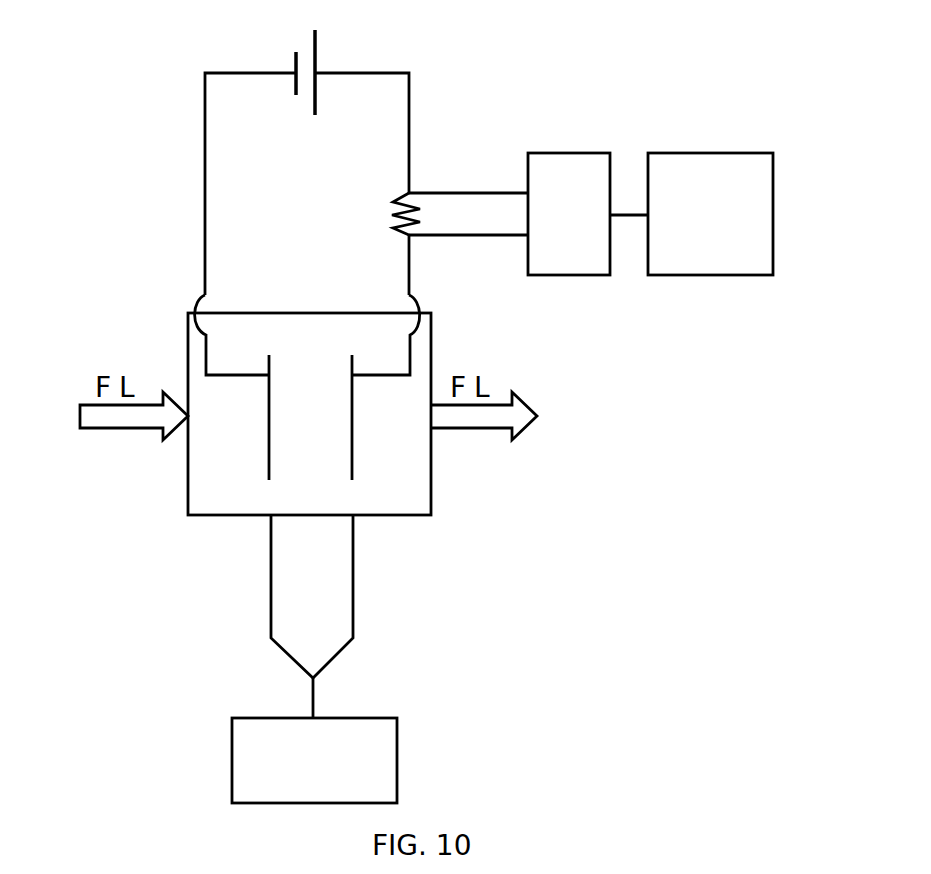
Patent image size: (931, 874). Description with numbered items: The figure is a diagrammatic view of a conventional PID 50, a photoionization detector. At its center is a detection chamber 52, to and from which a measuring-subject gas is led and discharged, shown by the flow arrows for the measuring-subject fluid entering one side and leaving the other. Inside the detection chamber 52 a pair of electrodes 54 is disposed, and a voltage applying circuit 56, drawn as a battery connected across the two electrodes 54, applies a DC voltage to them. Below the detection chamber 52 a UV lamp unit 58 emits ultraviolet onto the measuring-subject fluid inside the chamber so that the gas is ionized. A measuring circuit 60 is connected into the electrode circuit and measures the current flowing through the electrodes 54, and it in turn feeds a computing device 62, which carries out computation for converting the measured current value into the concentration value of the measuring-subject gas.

The PID 50 is at (110, 120).
The detection chamber 52 is at (213, 517).
The pair of electrodes 54 is at (270, 468).
The voltage applying circuit 56 is at (318, 48).
The UV lamp unit 58 is at (358, 648).
The measuring circuit 60 is at (553, 152).
The computing device 62 is at (692, 152).